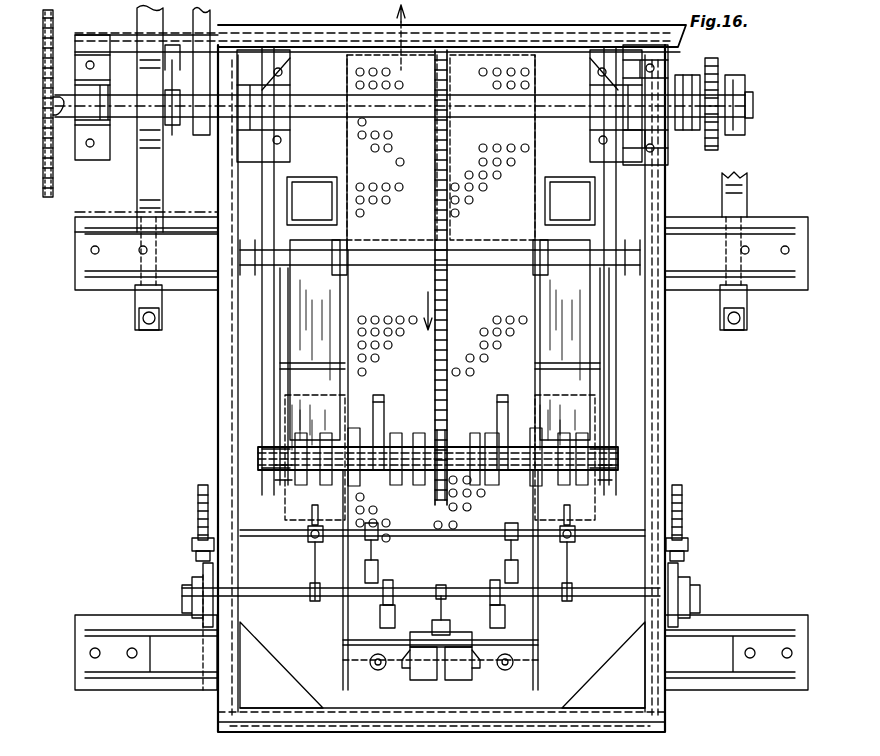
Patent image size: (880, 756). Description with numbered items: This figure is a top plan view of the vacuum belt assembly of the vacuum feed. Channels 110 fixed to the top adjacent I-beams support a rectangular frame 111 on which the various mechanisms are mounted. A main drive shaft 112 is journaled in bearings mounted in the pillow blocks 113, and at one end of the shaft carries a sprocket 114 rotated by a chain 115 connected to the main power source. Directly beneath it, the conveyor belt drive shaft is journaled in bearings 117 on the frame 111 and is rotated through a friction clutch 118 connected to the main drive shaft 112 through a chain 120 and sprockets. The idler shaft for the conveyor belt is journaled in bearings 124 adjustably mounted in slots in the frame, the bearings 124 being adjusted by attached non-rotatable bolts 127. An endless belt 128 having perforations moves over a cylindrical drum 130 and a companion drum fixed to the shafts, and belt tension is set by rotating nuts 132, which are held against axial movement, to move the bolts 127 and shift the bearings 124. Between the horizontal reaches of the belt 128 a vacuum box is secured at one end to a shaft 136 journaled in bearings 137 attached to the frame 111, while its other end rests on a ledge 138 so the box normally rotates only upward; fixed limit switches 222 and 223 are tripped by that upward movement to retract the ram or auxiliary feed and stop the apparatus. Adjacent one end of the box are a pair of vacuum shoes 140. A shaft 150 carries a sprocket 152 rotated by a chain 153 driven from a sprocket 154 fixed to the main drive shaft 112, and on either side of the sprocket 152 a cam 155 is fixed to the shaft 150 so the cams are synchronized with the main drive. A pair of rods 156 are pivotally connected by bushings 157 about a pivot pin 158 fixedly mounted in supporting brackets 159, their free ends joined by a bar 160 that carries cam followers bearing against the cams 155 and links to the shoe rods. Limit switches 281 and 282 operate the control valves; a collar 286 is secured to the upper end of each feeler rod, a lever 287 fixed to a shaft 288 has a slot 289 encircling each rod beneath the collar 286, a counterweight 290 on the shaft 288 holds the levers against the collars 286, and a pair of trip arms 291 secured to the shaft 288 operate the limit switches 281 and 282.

The channel 110 is at (112, 290).
The frame 111 is at (663, 402).
The main drive shaft 112 is at (125, 120).
The pillow block 113 is at (90, 50).
The sprocket 114 is at (55, 35).
The chain 115 is at (48, 195).
The bearing 117 is at (200, 135).
The friction clutch 118 is at (745, 120).
The chain 120 is at (718, 65).
The bearing 124 is at (203, 568).
The bolt 127 is at (198, 495).
The endless belt 128 is at (420, 359).
The cylindrical drum 130 is at (540, 62).
The nut 132 is at (192, 542).
The shaft 136 is at (320, 280).
The bearing 137 is at (252, 300).
The ledge 138 is at (268, 640).
The vacuum shoe 140 is at (298, 490).
The shaft 150 is at (478, 480).
The sprocket 152 is at (448, 420).
The chain 153 is at (448, 296).
The sprocket 154 is at (460, 80).
The cam 155 is at (384, 412).
The rod 156 is at (272, 190).
The bushing 157 is at (300, 135).
The pivot pin 158 is at (326, 100).
The supporting bracket 159 is at (245, 60).
The bar 160 is at (592, 470).
The limit switch 222 is at (425, 678).
The limit switch 223 is at (458, 678).
The limit switch 281 is at (380, 620).
The limit switch 282 is at (505, 615).
The collar 286 is at (308, 536).
The lever 287 is at (313, 565).
The shaft 288 is at (423, 585).
The slot 289 is at (322, 495).
The counterweight 290 is at (450, 626).
The trip arm 291 is at (393, 580).